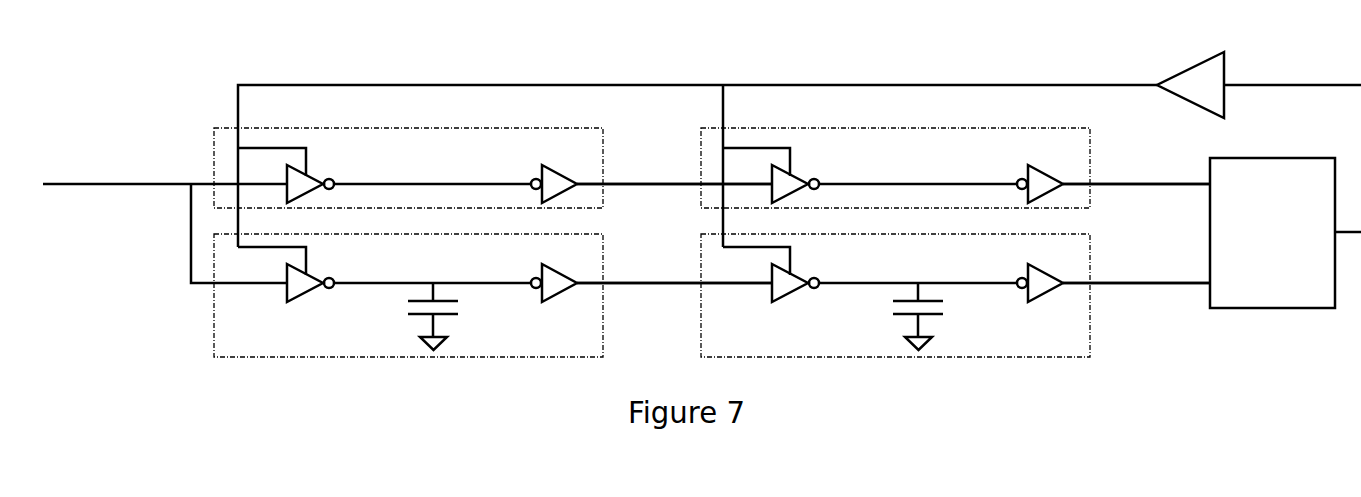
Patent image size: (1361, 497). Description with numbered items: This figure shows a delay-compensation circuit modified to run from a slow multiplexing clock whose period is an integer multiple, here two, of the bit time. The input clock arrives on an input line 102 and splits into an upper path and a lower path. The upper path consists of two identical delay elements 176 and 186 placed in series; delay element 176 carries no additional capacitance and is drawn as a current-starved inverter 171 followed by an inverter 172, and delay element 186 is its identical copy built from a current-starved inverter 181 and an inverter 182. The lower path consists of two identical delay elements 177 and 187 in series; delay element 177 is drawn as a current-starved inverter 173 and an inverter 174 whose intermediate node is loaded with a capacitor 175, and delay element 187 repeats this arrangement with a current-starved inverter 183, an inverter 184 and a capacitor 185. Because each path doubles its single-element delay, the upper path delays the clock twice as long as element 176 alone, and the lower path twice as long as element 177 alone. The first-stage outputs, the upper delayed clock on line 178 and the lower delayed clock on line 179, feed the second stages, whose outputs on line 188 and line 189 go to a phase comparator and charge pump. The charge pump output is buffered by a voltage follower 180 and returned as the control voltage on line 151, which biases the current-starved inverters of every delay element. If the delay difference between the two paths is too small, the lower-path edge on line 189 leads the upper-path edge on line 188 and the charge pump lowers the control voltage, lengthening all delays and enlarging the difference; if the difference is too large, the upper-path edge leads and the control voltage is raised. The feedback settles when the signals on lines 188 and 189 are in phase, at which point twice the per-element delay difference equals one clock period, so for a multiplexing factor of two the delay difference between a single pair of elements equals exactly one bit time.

The clock input ck 102 is at (88, 187).
The control voltage line 151 is at (273, 84).
The current-starved inverter 171 is at (313, 175).
The inverter 172 is at (563, 175).
The current-starved inverter 173 is at (313, 274).
The inverter 174 is at (563, 274).
The capacitor mC 175 is at (449, 316).
The delay element 176 is at (603, 196).
The delay element 177 is at (603, 345).
The line carrying delayed clock signal cx1 178 is at (620, 183).
The line carrying delayed clock signal cxm 179 is at (620, 282).
The voltage follower 180 is at (1188, 63).
The current-starved inverter 181 is at (798, 175).
The inverter 182 is at (1049, 175).
The current-starved inverter 183 is at (798, 274).
The inverter 184 is at (1049, 274).
The capacitor mC 185 is at (934, 316).
The delay element 186 is at (1090, 196).
The delay element 187 is at (1090, 345).
The line carrying clock signal cy1 188 is at (1173, 183).
The line carrying clock signal cym 189 is at (1178, 282).